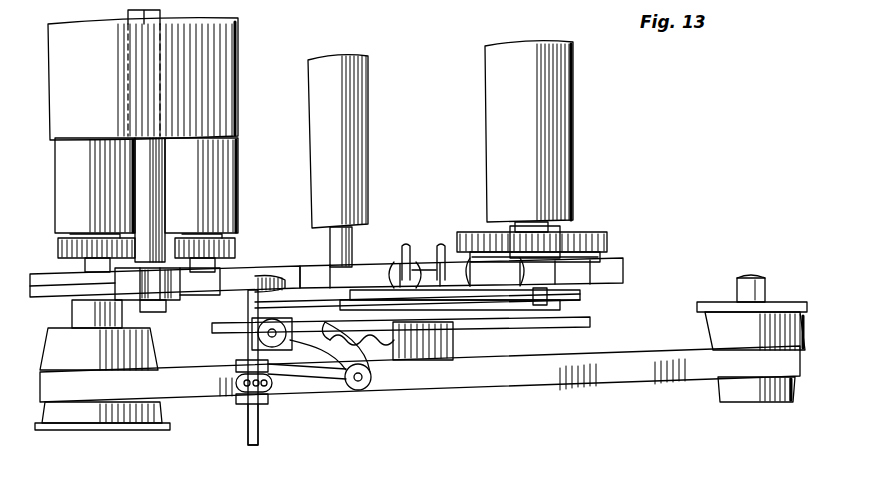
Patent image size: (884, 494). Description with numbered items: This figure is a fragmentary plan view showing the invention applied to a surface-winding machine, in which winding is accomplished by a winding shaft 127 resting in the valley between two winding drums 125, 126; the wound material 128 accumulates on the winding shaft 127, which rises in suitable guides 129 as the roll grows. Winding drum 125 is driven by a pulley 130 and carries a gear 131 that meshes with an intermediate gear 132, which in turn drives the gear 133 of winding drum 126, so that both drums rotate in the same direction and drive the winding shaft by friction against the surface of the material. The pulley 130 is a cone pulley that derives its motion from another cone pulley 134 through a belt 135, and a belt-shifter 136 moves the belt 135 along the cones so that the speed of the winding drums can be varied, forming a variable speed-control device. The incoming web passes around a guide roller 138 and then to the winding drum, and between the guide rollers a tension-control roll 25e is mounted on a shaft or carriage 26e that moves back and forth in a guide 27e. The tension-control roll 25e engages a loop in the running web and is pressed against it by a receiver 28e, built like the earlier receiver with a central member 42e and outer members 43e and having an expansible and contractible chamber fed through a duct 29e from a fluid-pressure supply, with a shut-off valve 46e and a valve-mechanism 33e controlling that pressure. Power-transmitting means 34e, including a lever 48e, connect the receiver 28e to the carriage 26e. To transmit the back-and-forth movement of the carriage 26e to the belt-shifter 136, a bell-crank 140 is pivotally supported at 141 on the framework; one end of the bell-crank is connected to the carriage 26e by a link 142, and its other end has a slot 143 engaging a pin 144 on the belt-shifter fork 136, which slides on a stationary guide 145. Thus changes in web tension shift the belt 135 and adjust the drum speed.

The wound material 128 is at (143, 75).
The winding drum 125 is at (95, 185).
The winding drum 126 is at (201, 185).
The intermediate gear 132 is at (168, 236).
The gear 131 is at (58, 248).
The gear 133 is at (238, 250).
The guides 129 is at (210, 296).
The winding shaft 127 is at (150, 312).
The pulley 130 is at (80, 430).
The belt 135 is at (645, 375).
The cone pulley 134 is at (745, 404).
The guide roller 138 is at (352, 98).
The tension-control roll 25e is at (573, 170).
The carriage 26e is at (552, 228).
The guide 27e is at (623, 270).
The central member 42e is at (408, 246).
The receiver 28e is at (432, 242).
The outer members 43e is at (396, 258).
The power-transmitting means 34e is at (557, 300).
The lever 48e is at (553, 330).
The link 142 is at (483, 350).
The valve-mechanism 33e is at (290, 348).
The belt-shifter 136 is at (262, 412).
The slot 143 is at (240, 392).
The pin 144 is at (250, 392).
The stationary guide 145 is at (253, 446).
The bell-crank 140 is at (330, 378).
The pivot 141 is at (357, 392).
The duct 29e is at (374, 392).
The shut-off valve 46e is at (423, 362).